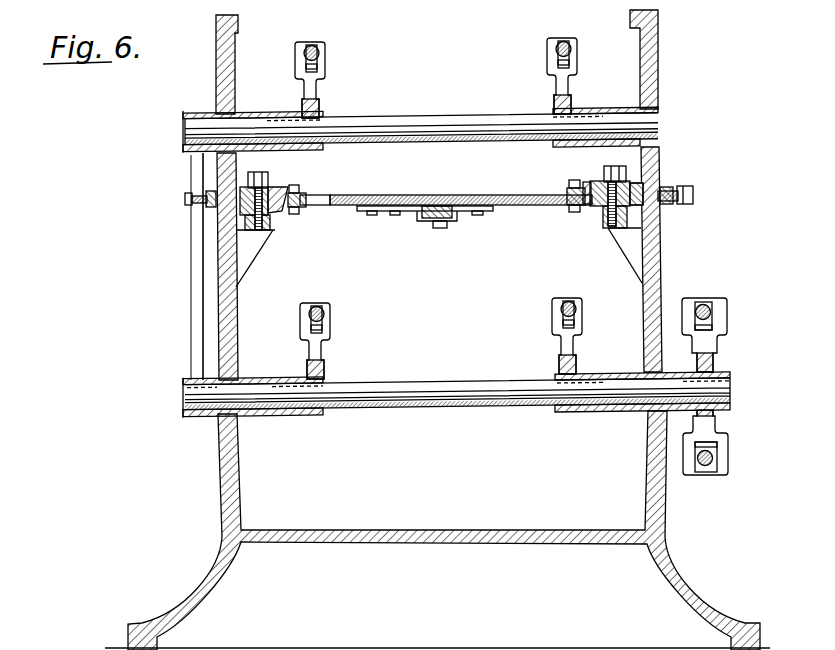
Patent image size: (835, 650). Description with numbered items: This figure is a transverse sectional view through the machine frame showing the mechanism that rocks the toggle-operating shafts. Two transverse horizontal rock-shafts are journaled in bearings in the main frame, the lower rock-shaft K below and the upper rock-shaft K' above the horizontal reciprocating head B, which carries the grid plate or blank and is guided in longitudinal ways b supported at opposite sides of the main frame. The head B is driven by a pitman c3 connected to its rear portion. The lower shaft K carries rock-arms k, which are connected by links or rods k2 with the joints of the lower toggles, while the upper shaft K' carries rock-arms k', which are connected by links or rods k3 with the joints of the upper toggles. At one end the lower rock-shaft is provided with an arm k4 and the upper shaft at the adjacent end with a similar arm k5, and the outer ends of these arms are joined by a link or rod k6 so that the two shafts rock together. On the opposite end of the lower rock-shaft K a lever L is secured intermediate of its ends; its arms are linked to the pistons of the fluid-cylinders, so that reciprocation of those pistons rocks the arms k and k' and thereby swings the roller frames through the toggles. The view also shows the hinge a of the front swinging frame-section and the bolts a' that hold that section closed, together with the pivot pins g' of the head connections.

The upper transverse horizontal rock-shaft K' is at (421, 121).
The lower transverse horizontal rock-shaft K is at (457, 387).
The rock-arms k' is at (436, 78).
The rock-arms k is at (447, 338).
The links or rods k2 is at (331, 318).
The links or rods k3 is at (304, 53).
The arm k4 is at (240, 400).
The arm k5 is at (241, 130).
The link or rod k6 is at (182, 266).
The lever L is at (728, 335).
The longitudinal ways b is at (276, 216).
The pivot pins g' is at (436, 198).
The hinge a is at (315, 188).
The bolts a' is at (461, 186).
The reciprocating head B is at (562, 206).
The pitman c3 is at (425, 222).